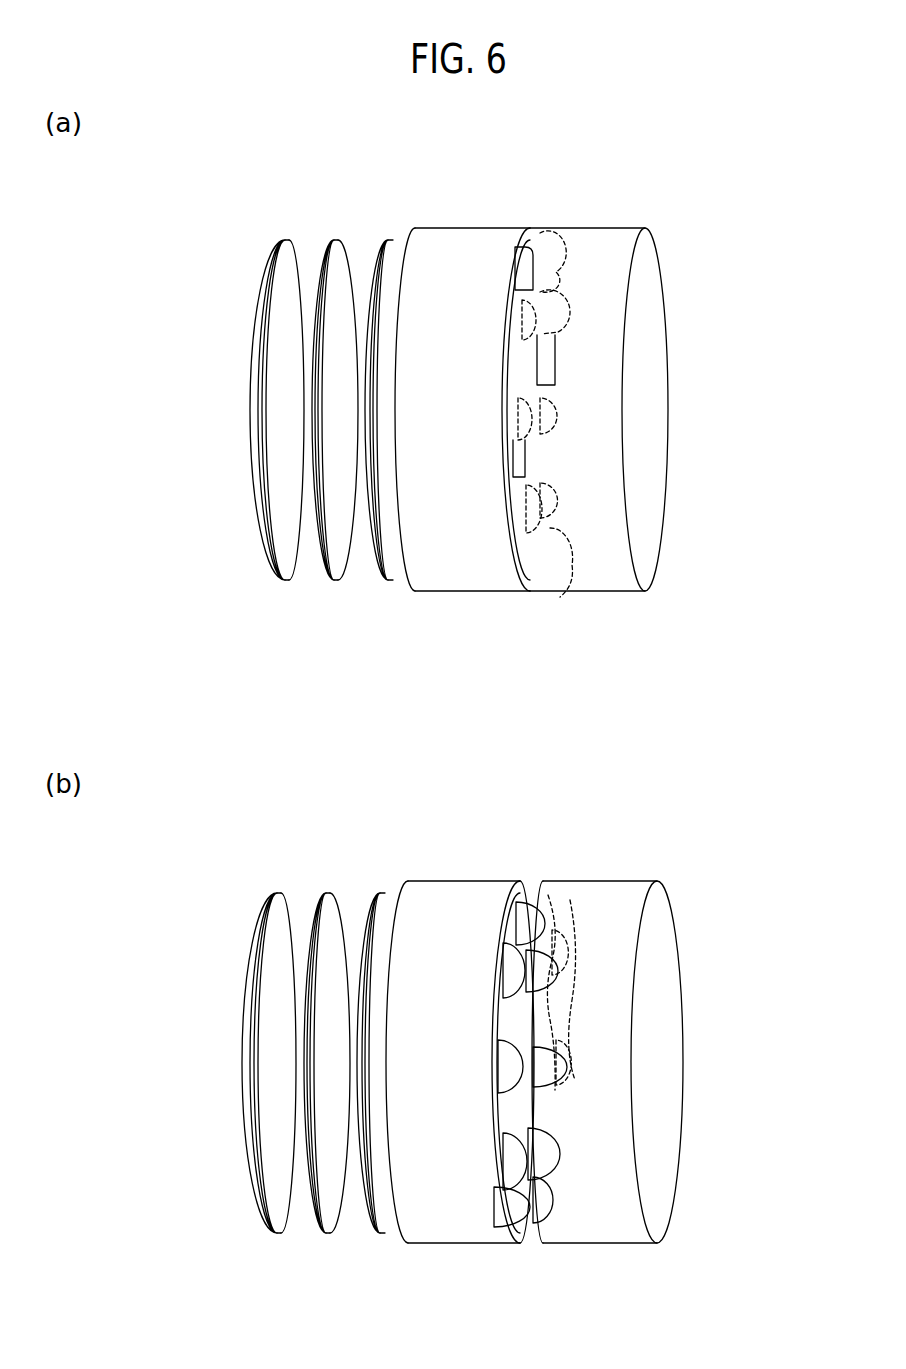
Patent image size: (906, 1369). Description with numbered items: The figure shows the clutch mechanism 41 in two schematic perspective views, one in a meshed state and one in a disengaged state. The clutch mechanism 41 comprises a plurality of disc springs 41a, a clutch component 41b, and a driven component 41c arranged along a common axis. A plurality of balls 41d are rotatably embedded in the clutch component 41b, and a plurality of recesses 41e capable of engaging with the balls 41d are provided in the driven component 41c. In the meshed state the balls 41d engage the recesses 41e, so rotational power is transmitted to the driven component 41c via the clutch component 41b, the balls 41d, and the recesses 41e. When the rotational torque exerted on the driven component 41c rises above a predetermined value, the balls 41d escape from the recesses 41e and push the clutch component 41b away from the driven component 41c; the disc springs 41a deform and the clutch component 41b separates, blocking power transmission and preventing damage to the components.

The clutch mechanism 41 is at (200, 133).
The disc springs 41a is at (407, 250).
The clutch component 41b is at (462, 247).
The driven component 41c is at (578, 247).
The balls 41d is at (567, 520).
The recesses 41e is at (563, 1020).